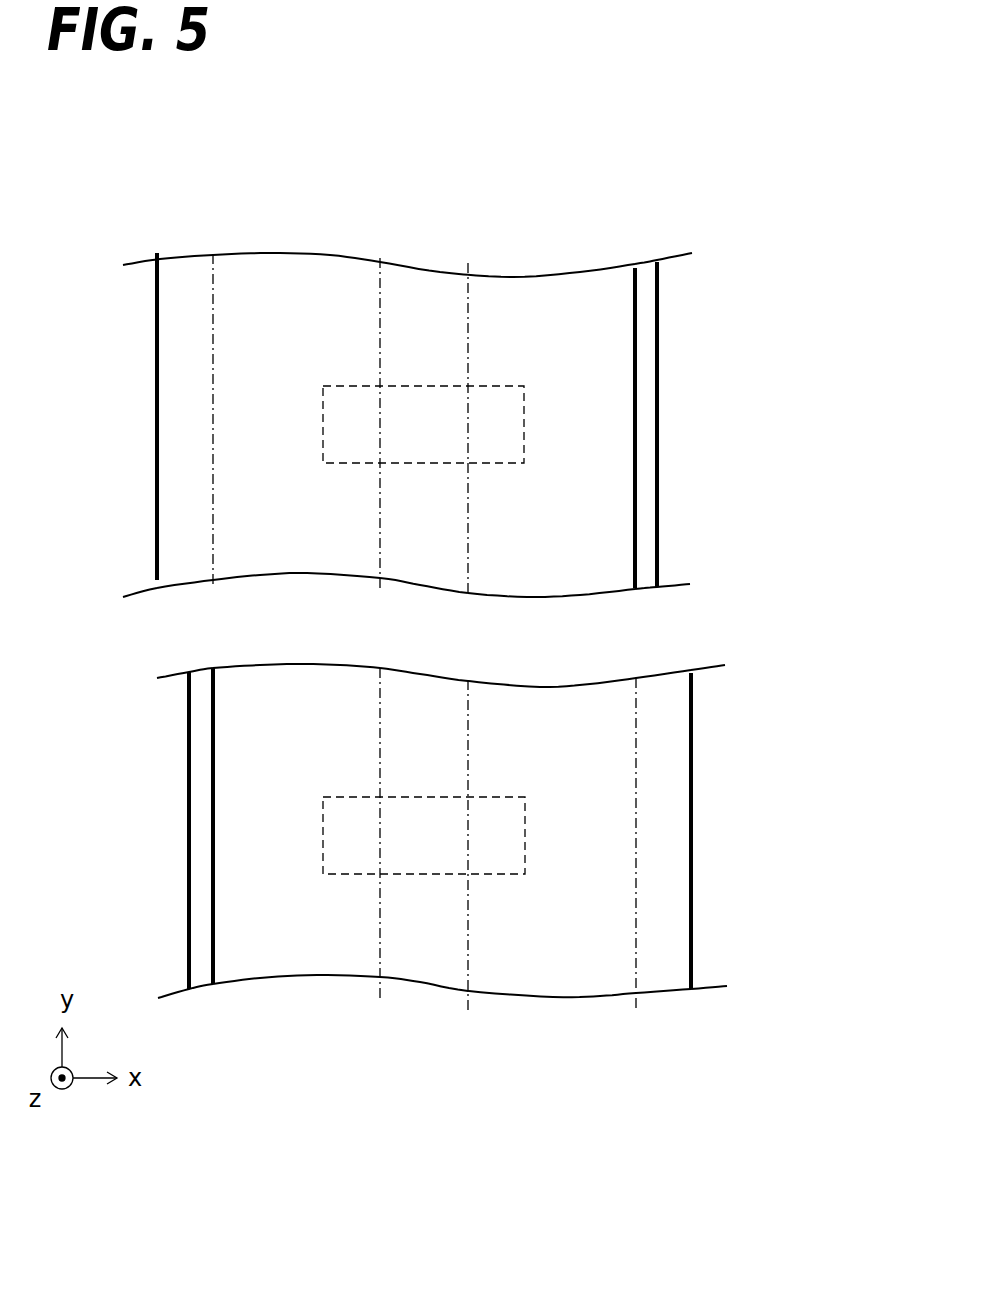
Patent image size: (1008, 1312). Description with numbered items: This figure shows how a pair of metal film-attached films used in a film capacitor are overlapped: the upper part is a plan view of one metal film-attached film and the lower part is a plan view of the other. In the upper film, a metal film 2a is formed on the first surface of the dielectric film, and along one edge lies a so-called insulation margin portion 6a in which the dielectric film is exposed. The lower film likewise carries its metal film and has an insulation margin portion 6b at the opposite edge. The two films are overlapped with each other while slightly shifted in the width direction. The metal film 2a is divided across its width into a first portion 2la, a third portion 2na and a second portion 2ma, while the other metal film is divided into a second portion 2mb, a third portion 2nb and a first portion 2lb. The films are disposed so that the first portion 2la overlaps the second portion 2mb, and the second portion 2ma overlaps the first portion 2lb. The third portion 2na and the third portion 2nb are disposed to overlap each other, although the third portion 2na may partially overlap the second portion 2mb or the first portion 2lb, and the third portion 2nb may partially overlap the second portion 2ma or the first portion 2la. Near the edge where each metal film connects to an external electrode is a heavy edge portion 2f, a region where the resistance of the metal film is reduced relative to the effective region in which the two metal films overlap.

The metal film 2a is at (245, 140).
The first portion of the metal film 2la is at (157, 230).
The third portion of the metal film 2na is at (468, 210).
The second portion of the metal film 2ma is at (635, 230).
The second portion of the metal film 2mb is at (213, 1020).
The third portion of the metal film 2nb is at (380, 1053).
The first portion of the metal film 2lb is at (470, 1022).
The heavy edge portion 2f is at (190, 442).
The insulation margin portion 6a is at (647, 430).
The insulation margin portion 6b is at (200, 830).